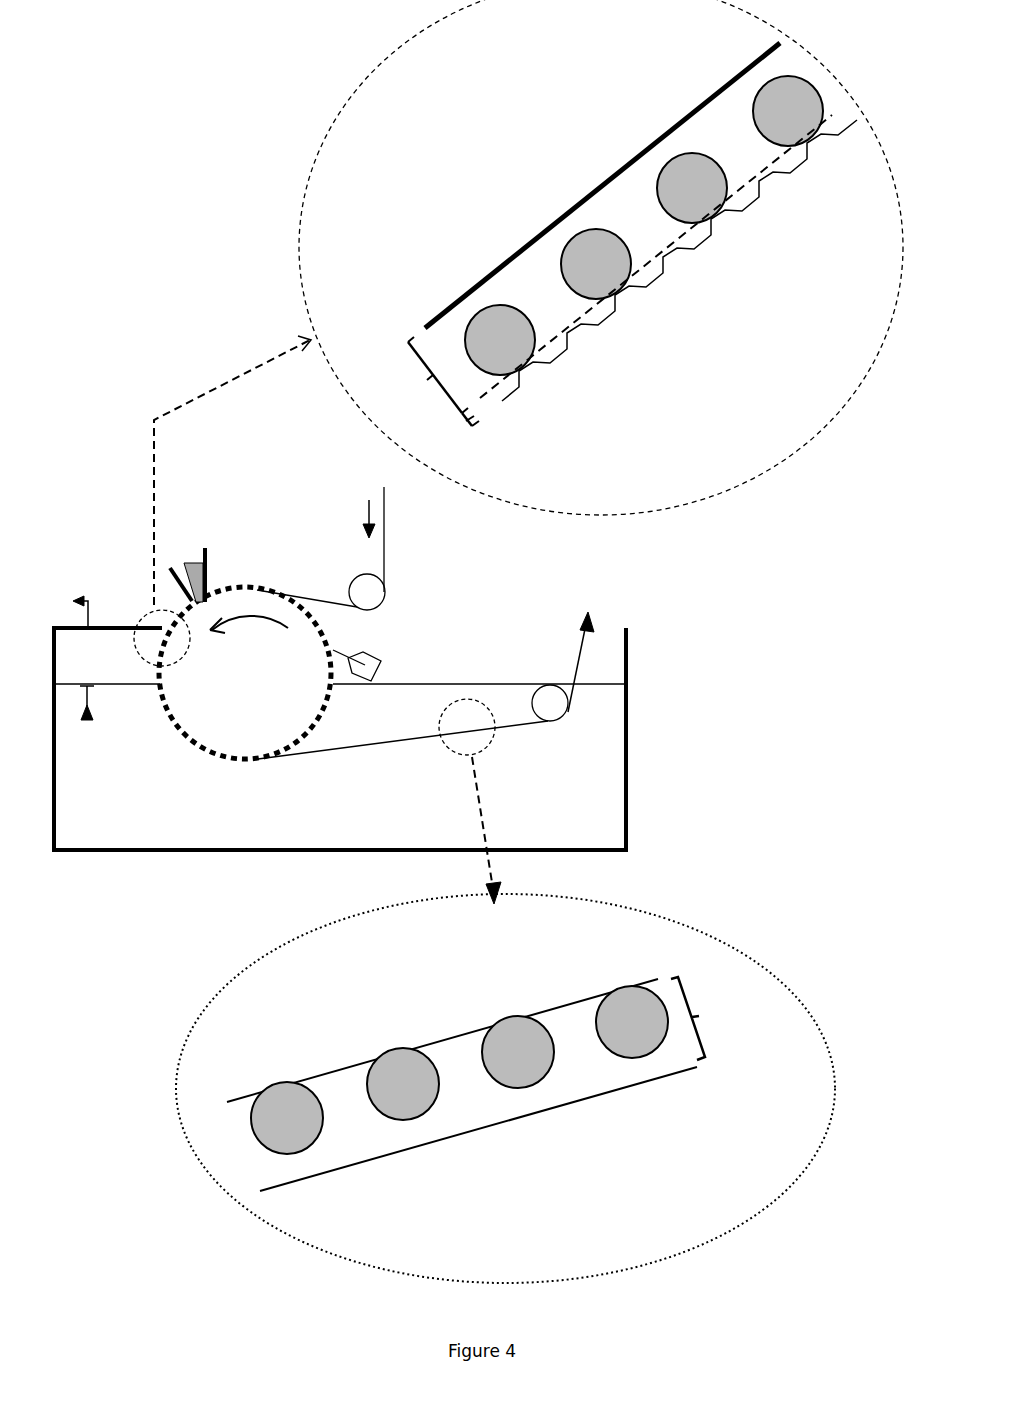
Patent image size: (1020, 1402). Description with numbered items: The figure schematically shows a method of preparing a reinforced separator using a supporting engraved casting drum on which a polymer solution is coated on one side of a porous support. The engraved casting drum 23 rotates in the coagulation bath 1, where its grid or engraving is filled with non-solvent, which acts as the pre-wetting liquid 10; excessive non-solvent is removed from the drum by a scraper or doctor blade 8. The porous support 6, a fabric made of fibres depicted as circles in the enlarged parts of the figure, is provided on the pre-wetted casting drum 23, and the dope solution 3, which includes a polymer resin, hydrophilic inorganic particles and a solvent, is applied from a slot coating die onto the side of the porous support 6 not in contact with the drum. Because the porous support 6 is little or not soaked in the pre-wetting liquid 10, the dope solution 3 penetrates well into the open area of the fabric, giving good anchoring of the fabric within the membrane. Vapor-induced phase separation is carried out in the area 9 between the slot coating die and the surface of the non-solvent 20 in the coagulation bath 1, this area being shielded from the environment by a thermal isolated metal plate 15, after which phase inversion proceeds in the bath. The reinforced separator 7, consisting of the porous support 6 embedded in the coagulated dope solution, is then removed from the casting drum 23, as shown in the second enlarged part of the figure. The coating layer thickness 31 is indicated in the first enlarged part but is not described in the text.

The coagulation bath 1 is at (340, 738).
The dope solution 3 is at (193, 557).
The porous support 6 is at (586, 343).
The reinforced separator 7 is at (485, 889).
The scraper or doctor blade 8 is at (372, 662).
The VIPS area 9 is at (339, 667).
The pre-wetting liquid 10 is at (646, 284).
The thermal isolated metal plate 15 is at (67, 609).
The surface of the non-solvent 20 is at (102, 705).
The engraved casting drum 23 is at (437, 537).
The coating layer 31 is at (587, 228).